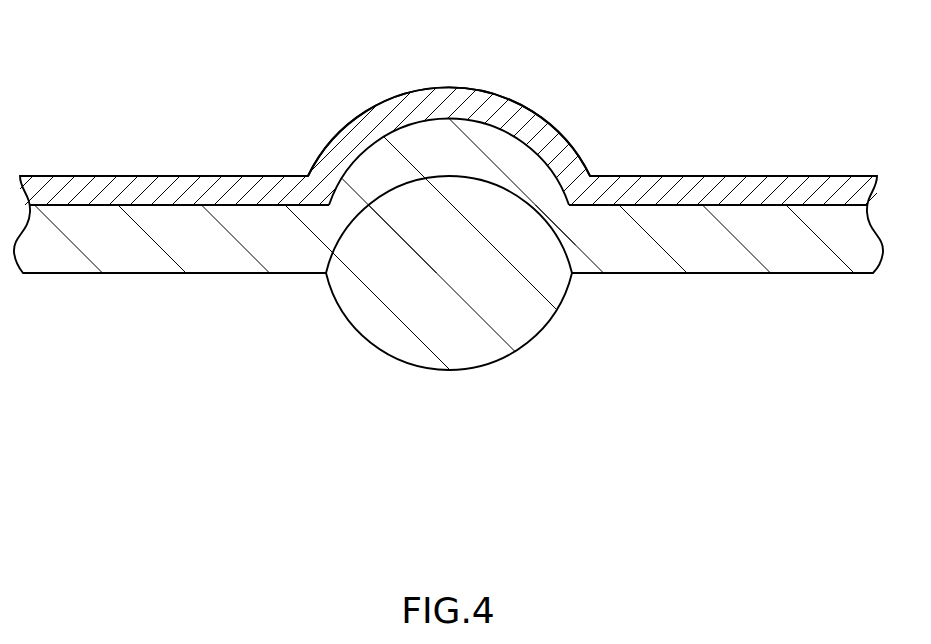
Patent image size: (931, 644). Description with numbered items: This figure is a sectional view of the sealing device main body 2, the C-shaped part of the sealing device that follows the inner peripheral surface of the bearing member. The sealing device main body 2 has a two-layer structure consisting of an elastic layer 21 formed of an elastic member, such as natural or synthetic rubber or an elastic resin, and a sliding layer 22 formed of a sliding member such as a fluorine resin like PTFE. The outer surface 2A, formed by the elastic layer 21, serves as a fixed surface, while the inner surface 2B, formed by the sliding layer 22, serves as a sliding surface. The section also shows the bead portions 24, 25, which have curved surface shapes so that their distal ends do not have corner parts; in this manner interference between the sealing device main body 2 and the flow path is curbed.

The sealing device main body 2 is at (741, 99).
The outer surface 2A is at (213, 273).
The inner surface 2B is at (208, 178).
The elastic layer 21 is at (803, 258).
The sliding layer 22 is at (92, 194).
The bead portion 24 is at (465, 332).
The bead portion 25 is at (452, 152).